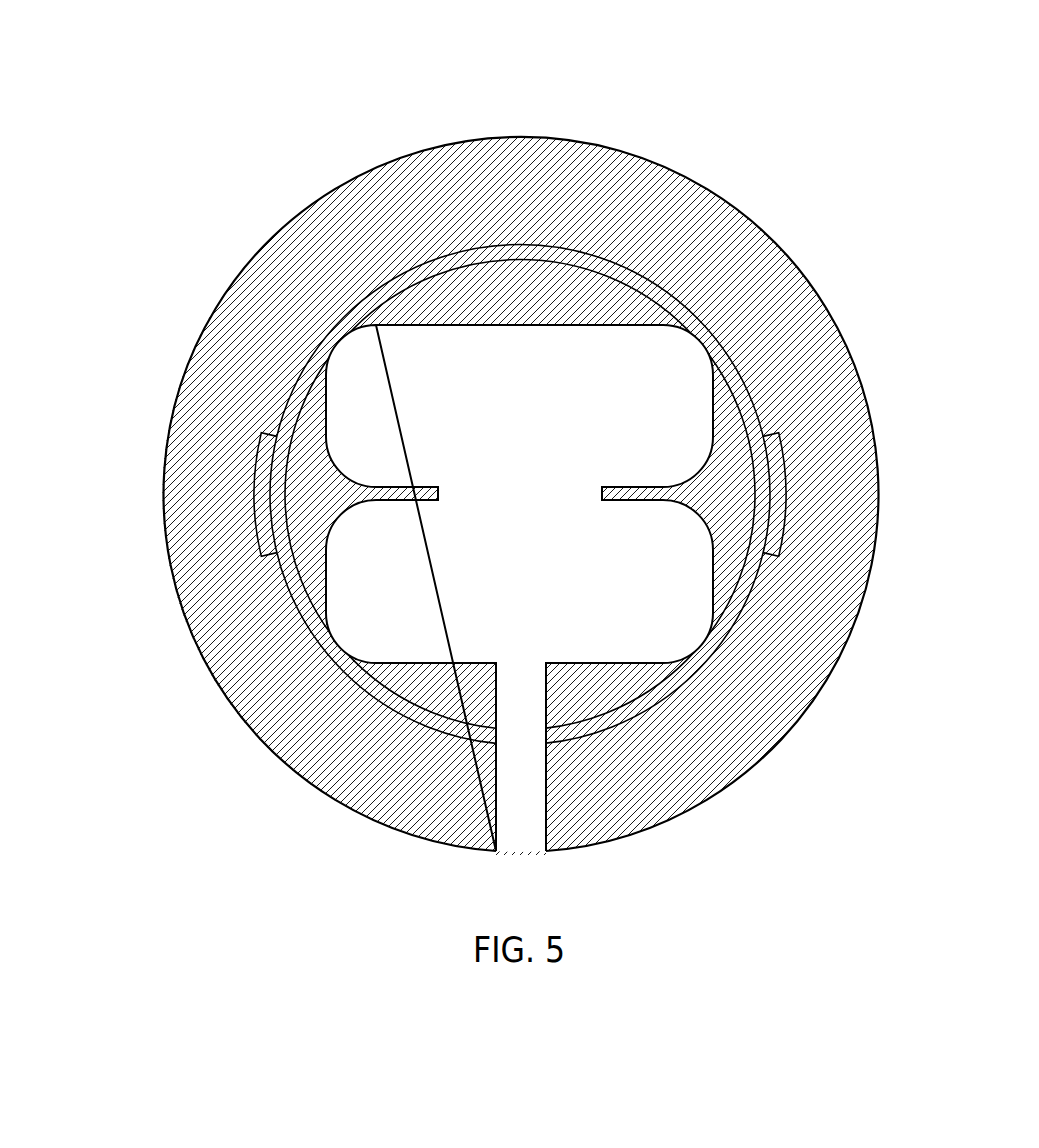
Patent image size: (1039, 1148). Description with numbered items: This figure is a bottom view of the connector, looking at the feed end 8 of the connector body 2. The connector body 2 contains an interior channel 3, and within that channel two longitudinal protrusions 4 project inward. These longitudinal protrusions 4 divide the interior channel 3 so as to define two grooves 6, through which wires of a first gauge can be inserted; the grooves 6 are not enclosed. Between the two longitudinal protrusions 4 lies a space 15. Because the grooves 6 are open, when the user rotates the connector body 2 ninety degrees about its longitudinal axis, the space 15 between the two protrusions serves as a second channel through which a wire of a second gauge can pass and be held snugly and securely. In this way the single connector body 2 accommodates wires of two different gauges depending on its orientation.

The feed end 8 is at (762, 197).
The connector body 2 is at (377, 288).
The interior channel 3 is at (363, 368).
The longitudinal protrusion 4 is at (380, 490).
The groove 6 is at (681, 636).
The space between the two protrusions 15 is at (540, 500).